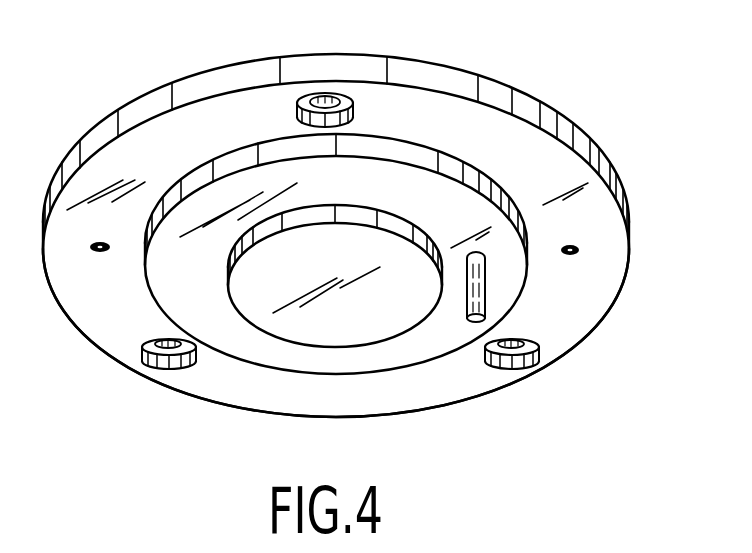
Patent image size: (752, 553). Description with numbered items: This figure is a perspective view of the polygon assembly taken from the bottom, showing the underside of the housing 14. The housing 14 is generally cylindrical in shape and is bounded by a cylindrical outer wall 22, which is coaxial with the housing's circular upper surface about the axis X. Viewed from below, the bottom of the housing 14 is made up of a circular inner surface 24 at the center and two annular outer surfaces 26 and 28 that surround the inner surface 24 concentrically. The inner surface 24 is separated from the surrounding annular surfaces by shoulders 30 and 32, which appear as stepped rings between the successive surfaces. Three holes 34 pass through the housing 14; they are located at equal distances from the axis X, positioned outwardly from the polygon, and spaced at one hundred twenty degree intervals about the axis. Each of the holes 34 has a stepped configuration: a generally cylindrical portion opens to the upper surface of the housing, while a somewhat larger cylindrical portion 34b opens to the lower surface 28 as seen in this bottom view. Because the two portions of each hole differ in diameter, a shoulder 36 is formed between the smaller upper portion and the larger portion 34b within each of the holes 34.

The housing 14 is at (344, 216).
The cylindrical outer wall 22 is at (367, 67).
The circular inner surface 24 is at (337, 332).
The annular outer surface 26 is at (180, 283).
The annular outer surface 28 is at (571, 340).
The shoulder 30 is at (355, 213).
The shoulder 32 is at (290, 147).
The holes 34 is at (153, 370).
The cylindrical portion 34b is at (340, 77).
The shoulder 36 is at (355, 104).